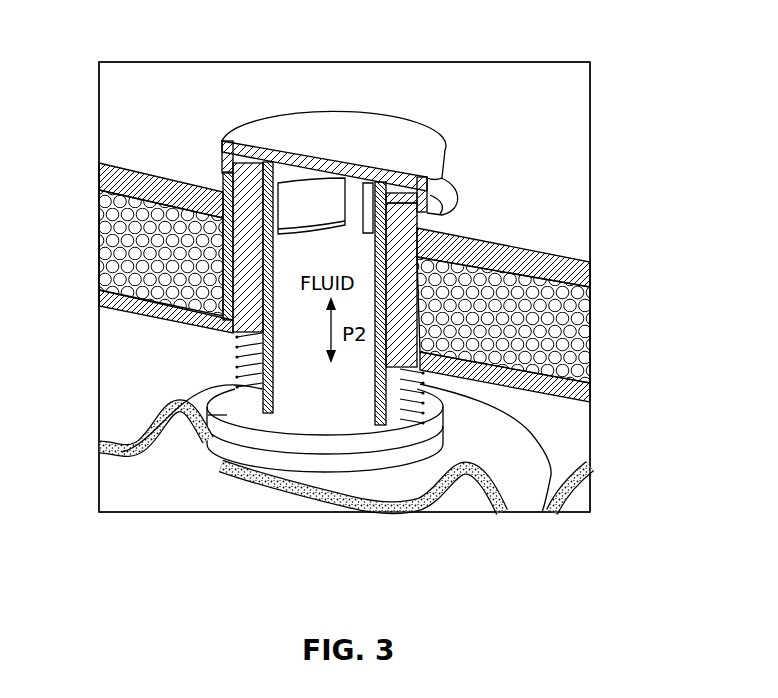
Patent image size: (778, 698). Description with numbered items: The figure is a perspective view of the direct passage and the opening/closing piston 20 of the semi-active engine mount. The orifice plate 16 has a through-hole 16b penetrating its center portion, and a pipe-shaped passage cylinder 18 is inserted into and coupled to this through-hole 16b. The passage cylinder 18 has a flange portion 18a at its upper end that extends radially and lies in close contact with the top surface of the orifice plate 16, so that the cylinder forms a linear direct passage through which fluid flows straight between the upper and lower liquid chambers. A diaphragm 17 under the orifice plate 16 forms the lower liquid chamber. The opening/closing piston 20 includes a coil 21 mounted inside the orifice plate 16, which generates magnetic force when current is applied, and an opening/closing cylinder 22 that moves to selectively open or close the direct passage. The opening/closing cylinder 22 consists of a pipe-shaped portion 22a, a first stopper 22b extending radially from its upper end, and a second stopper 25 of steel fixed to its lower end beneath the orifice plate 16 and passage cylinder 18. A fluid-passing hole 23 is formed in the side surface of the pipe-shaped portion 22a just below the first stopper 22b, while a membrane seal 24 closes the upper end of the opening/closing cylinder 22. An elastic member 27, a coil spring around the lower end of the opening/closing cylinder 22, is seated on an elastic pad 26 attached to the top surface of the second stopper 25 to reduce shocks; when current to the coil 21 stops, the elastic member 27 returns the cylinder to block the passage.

The orifice plate 16 is at (327, 246).
The through-hole 16b is at (238, 196).
The diaphragm 17 is at (517, 467).
The passage cylinder 18 is at (223, 333).
The flange portion 18a is at (452, 212).
The opening/closing piston 20 is at (380, 100).
The coil 21 is at (140, 257).
The opening/closing cylinder 22 is at (336, 301).
The pipe-shaped portion 22a is at (276, 372).
The first stopper 22b is at (236, 172).
The fluid-passing hole 23 is at (300, 183).
The seal 24 is at (420, 150).
The second stopper 25 is at (422, 447).
The elastic pad 26 is at (193, 430).
The elastic member 27 is at (424, 388).